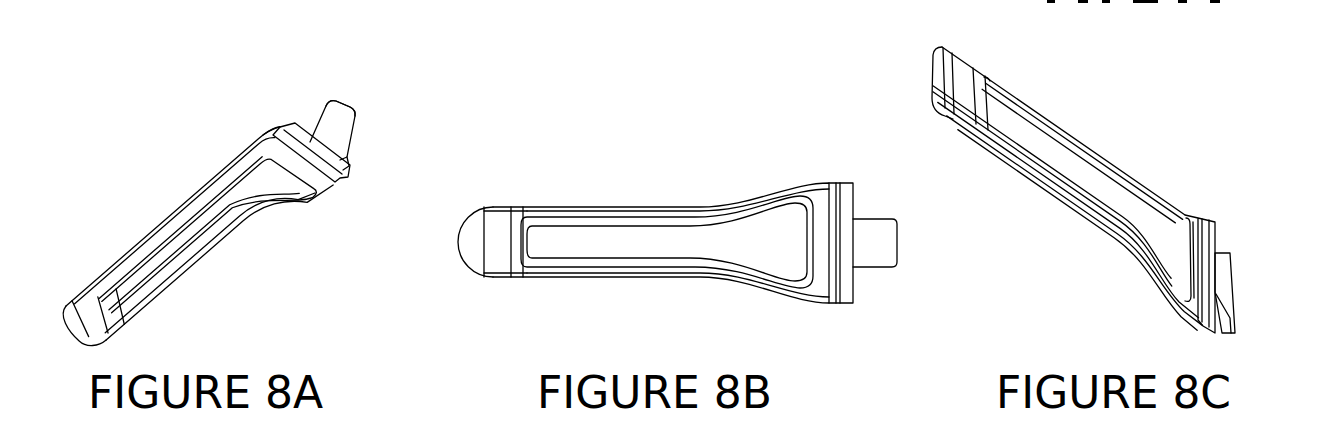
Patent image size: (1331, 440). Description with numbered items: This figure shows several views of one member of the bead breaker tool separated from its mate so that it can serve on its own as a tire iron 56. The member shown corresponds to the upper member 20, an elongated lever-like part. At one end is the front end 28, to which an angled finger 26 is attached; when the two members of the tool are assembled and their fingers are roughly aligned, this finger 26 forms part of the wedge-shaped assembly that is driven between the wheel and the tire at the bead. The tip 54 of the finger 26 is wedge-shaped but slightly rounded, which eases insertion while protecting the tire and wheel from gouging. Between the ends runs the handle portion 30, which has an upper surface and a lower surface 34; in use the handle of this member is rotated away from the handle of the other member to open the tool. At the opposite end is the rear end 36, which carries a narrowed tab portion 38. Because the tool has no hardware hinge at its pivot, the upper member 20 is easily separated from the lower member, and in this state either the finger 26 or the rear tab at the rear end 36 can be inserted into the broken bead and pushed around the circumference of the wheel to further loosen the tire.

In FIG. 8A, the upper member 20 is at (295, 192).
In FIG. 8B, the upper member 20 is at (760, 255).
In FIG. 8C, the upper member 20 is at (1187, 255).
In FIG. 8A, the angled finger 26 is at (318, 120).
In FIG. 8B, the angled finger 26 is at (866, 255).
In FIG. 8C, the angled finger 26 is at (1230, 302).
In FIG. 8A, the front end 28 is at (366, 138).
In FIG. 8B, the front end 28 is at (908, 238).
In FIG. 8C, the front end 28 is at (1237, 225).
In FIG. 8A, the handle portion 30 is at (178, 268).
In FIG. 8B, the handle portion 30 is at (565, 256).
In FIG. 8C, the handle portion 30 is at (1033, 142).
In FIG. 8A, the lower surface 34 is at (228, 228).
In FIG. 8B, the lower surface 34 is at (668, 242).
In FIG. 8C, the lower surface 34 is at (1098, 192).
In FIG. 8A, the rear end 36 is at (88, 249).
In FIG. 8B, the rear end 36 is at (470, 193).
In FIG. 8C, the rear end 36 is at (920, 45).
In FIG. 8A, the narrowed tab portion 38 is at (68, 318).
In FIG. 8B, the narrowed tab portion 38 is at (478, 250).
In FIG. 8C, the narrowed tab portion 38 is at (943, 78).
In FIG. 8A, the tip 54 is at (341, 112).
In FIG. 8A, the tire iron 56 is at (222, 152).